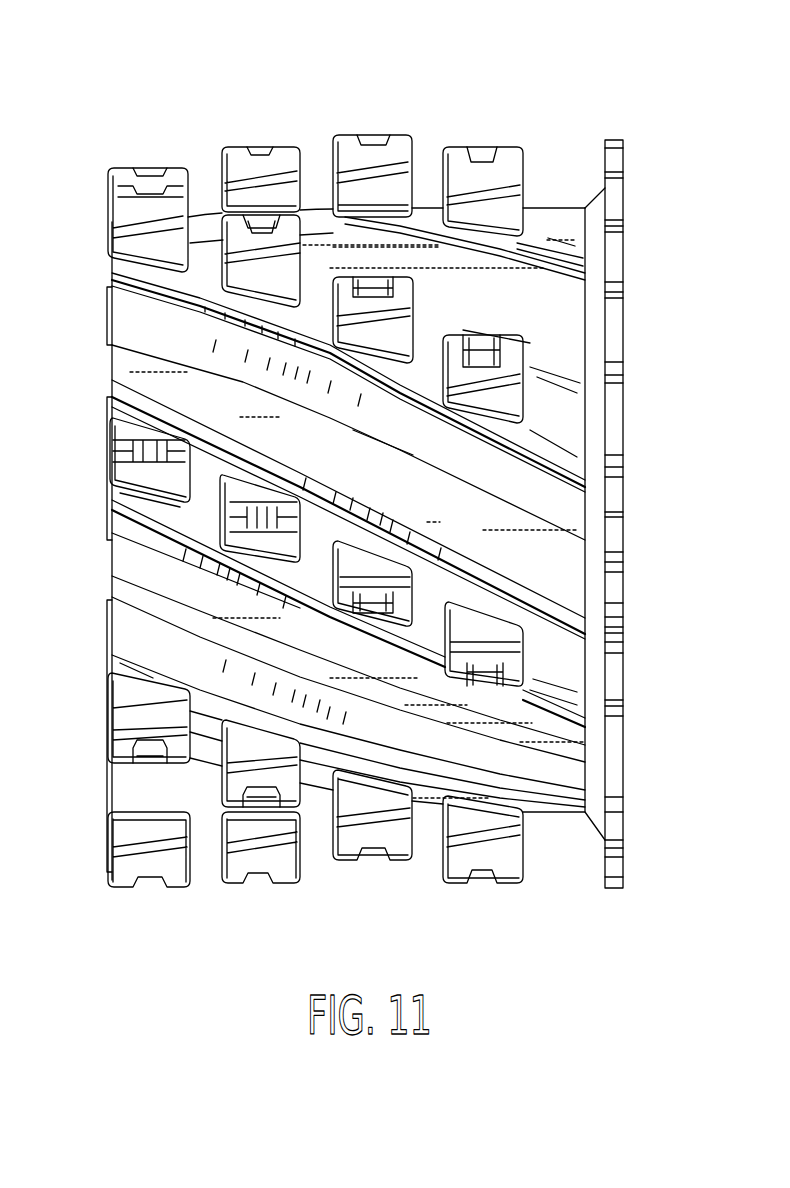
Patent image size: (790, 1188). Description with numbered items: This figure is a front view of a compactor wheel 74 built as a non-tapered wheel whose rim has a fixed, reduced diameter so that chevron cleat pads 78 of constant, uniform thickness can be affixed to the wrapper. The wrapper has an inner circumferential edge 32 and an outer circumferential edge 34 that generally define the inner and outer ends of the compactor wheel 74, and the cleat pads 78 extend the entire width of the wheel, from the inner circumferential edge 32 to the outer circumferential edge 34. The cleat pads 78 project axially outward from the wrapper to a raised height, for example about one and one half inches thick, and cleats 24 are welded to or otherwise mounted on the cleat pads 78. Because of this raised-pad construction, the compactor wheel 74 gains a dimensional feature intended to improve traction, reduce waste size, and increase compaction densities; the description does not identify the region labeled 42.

The compactor wheel 74 is at (133, 89).
The outer circumferential edge 34 is at (101, 571).
The inner circumferential edge 32 is at (589, 542).
The cleat pads 78 is at (565, 418).
The band segment 42 is at (412, 494).
The cleats 24 is at (257, 885).